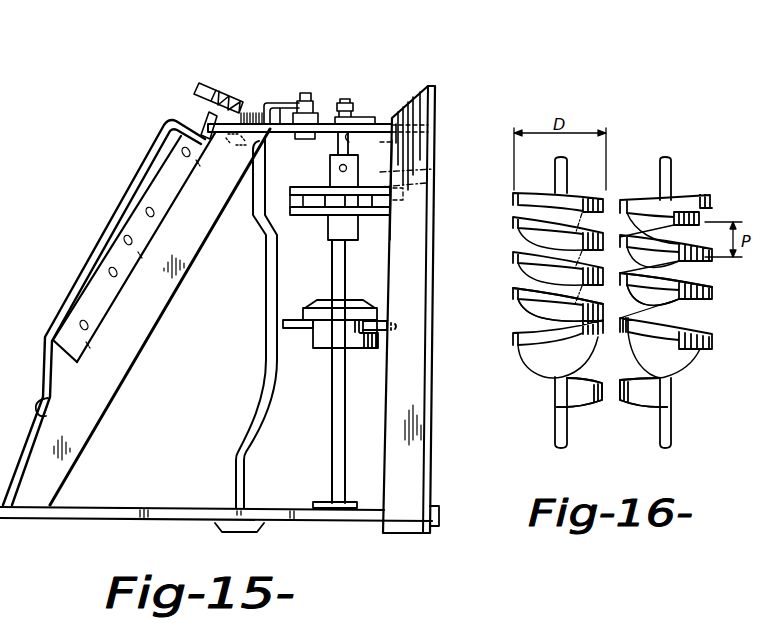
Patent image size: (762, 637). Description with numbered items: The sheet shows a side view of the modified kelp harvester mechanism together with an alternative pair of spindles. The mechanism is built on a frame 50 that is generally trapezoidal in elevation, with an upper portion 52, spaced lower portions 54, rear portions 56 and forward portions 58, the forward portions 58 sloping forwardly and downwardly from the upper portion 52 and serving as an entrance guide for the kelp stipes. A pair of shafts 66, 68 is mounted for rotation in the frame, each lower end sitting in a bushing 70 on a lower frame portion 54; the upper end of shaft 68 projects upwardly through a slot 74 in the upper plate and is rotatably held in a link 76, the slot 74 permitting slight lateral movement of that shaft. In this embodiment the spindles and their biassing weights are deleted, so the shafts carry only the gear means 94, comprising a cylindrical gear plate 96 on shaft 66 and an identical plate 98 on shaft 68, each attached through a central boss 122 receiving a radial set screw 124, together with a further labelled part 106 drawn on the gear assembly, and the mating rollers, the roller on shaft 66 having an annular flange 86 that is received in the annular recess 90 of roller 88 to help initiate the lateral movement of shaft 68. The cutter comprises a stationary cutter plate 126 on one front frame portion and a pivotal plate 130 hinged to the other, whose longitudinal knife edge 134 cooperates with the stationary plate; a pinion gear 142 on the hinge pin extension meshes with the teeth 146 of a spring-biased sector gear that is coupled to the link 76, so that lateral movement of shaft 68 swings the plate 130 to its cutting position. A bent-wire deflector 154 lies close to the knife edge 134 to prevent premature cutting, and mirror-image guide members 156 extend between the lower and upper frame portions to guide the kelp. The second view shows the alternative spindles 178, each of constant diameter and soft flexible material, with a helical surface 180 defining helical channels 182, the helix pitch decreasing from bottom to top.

In FIG. 15, the frame 50 is at (355, 526).
In FIG. 15, the upper portion 52 is at (385, 126).
In FIG. 15, the lower portions 54 is at (88, 511).
In FIG. 15, the rear portions 56 is at (412, 403).
In FIG. 15, the forward portions 58 is at (87, 388).
In FIG. 16, the shaft 66 is at (667, 430).
In FIG. 15, the shaft 68 is at (345, 258).
In FIG. 16, the shaft 68 is at (555, 433).
In FIG. 15, the bushing 70 is at (318, 507).
In FIG. 15, the slot 74 is at (436, 147).
In FIG. 15, the link 76 is at (352, 115).
In FIG. 15, the annular flange 86 is at (283, 324).
In FIG. 15, the roller 88 is at (380, 340).
In FIG. 15, the annular recess 90 is at (310, 340).
In FIG. 15, the gear means 94 is at (289, 186).
In FIG. 15, the cylindrical plate 96 is at (322, 214).
In FIG. 15, the cylindrical plate 98 is at (332, 187).
In FIG. 15, the mounting plate 106 is at (372, 203).
In FIG. 15, the central boss 122 is at (437, 190).
In FIG. 15, the set screw 124 is at (434, 172).
In FIG. 15, the stationary cutter plate 126 is at (110, 297).
In FIG. 15, the pivotal plate 130 is at (160, 197).
In FIG. 15, the knife edge 134 is at (122, 226).
In FIG. 15, the pinion gear 142 is at (200, 94).
In FIG. 15, the teeth 146 is at (253, 121).
In FIG. 15, the deflector 154 is at (152, 150).
In FIG. 15, the guide members 156 is at (237, 487).
In FIG. 16, the spindle 178 is at (512, 374).
In FIG. 16, the helical surface 180 is at (535, 311).
In FIG. 16, the helical channels 182 is at (540, 330).